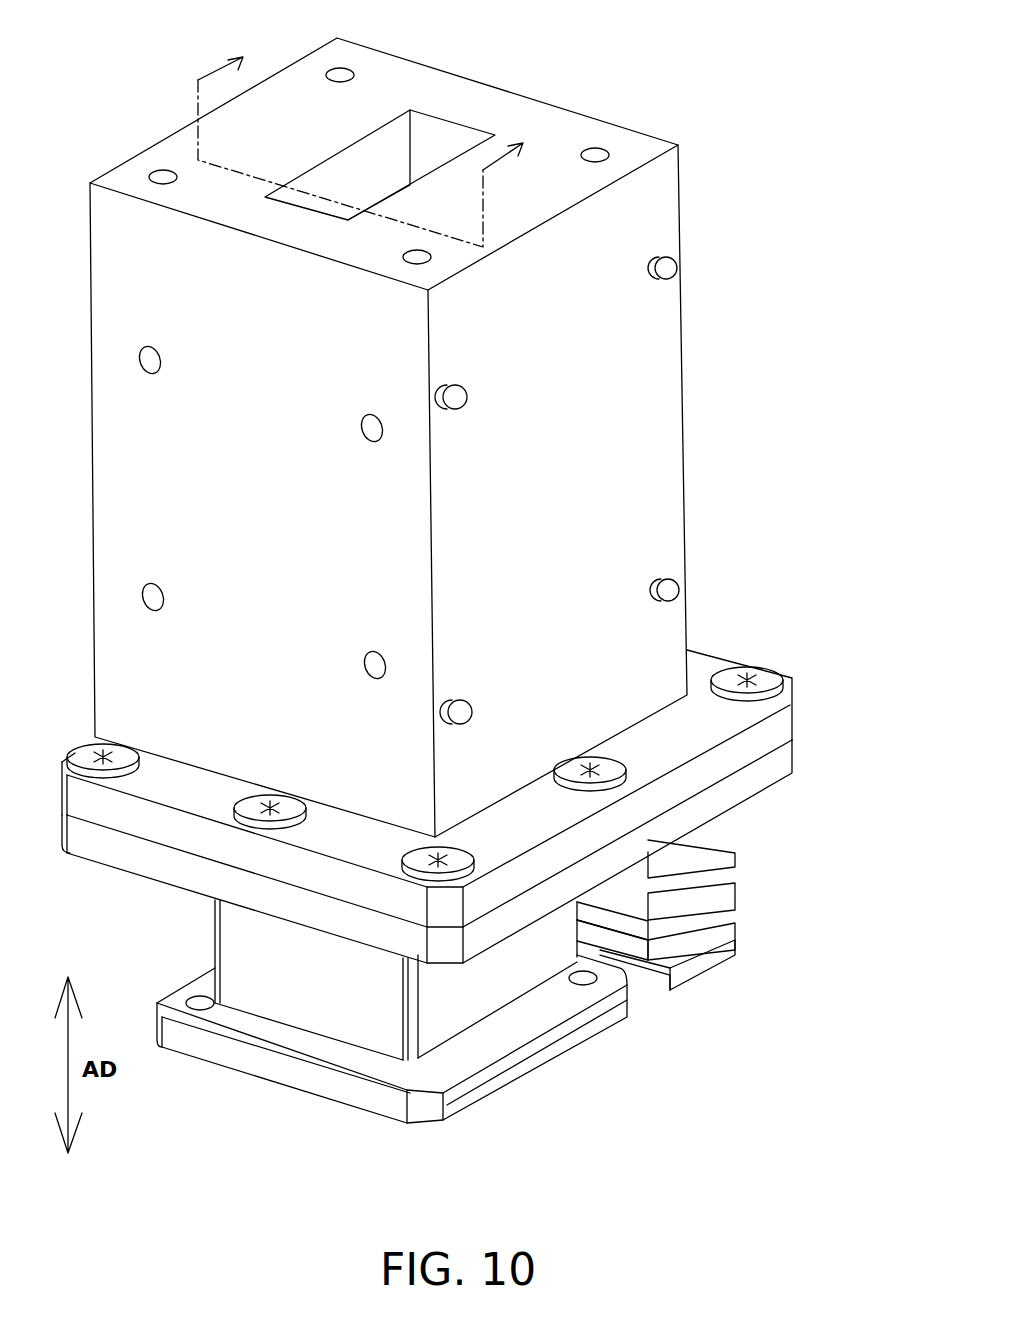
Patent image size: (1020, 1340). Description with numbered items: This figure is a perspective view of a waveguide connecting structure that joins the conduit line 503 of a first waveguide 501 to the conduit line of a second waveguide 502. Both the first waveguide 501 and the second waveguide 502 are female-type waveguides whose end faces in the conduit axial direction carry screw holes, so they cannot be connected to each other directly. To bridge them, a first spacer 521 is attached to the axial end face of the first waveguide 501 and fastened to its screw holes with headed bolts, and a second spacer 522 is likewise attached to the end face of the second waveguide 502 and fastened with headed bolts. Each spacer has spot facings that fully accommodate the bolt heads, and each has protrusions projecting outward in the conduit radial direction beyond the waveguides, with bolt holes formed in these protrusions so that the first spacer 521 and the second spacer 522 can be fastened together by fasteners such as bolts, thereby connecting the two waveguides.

The first waveguide 501 is at (621, 459).
The second waveguide 502 is at (497, 982).
The conduit line 503 is at (438, 138).
The first spacer 521 is at (778, 718).
The second spacer 522 is at (780, 765).